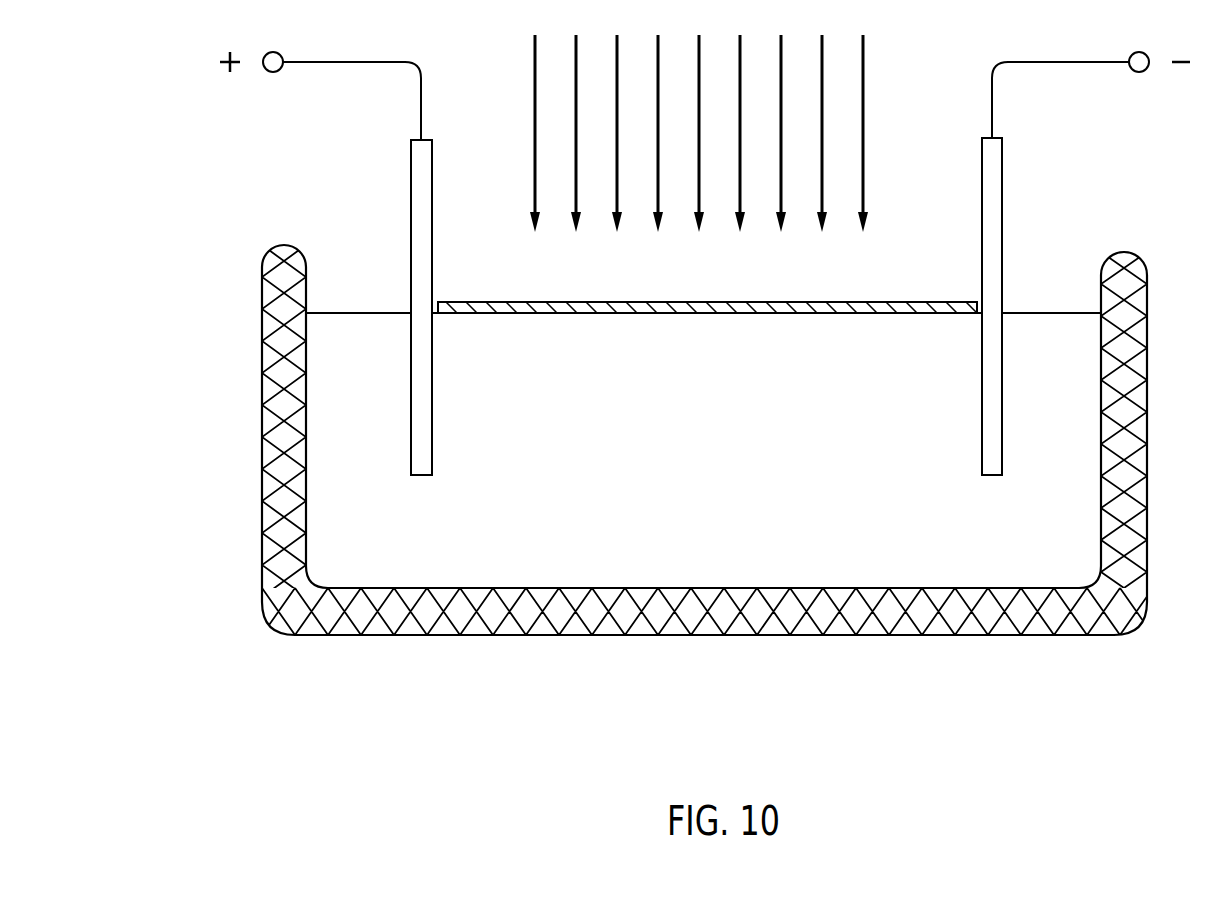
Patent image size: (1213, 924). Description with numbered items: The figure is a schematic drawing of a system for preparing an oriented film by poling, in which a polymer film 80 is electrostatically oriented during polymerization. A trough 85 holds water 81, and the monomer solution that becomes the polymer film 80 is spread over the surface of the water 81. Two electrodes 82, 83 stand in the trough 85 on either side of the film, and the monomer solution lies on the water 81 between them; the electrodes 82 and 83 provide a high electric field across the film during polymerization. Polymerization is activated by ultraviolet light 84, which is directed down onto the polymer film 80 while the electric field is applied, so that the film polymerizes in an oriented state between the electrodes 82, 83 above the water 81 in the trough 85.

The polymer film 80 is at (573, 313).
The water 81 is at (414, 550).
The electrode 82 is at (432, 437).
The electrode 83 is at (980, 435).
The ultraviolet light 84 is at (865, 108).
The trough 85 is at (262, 437).